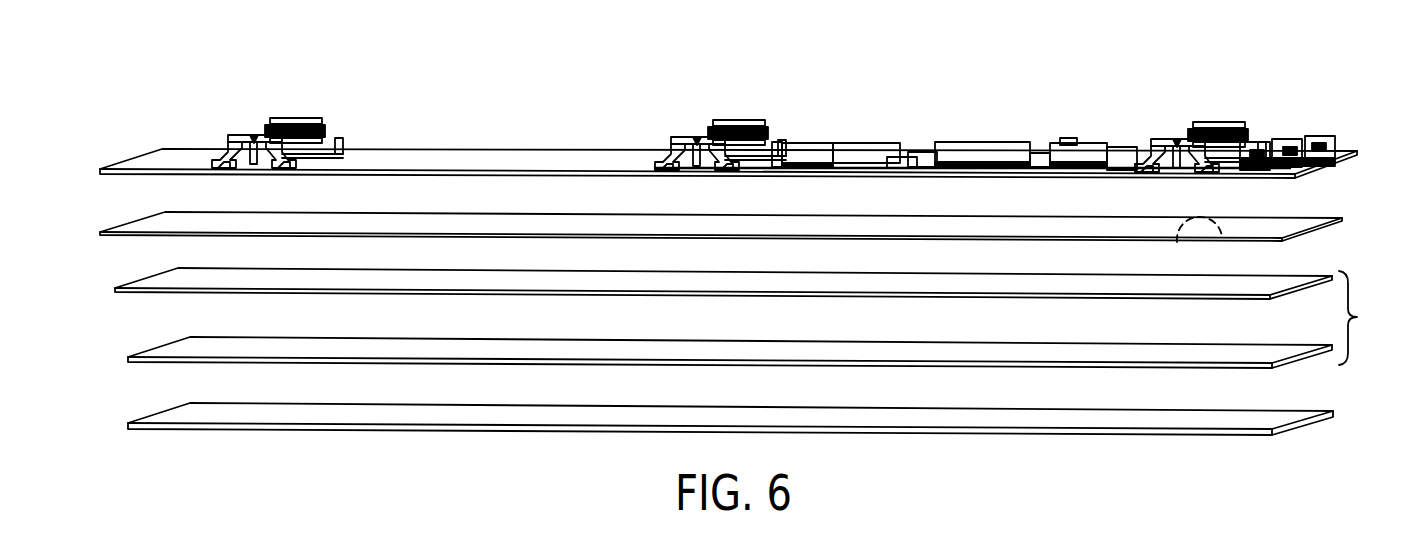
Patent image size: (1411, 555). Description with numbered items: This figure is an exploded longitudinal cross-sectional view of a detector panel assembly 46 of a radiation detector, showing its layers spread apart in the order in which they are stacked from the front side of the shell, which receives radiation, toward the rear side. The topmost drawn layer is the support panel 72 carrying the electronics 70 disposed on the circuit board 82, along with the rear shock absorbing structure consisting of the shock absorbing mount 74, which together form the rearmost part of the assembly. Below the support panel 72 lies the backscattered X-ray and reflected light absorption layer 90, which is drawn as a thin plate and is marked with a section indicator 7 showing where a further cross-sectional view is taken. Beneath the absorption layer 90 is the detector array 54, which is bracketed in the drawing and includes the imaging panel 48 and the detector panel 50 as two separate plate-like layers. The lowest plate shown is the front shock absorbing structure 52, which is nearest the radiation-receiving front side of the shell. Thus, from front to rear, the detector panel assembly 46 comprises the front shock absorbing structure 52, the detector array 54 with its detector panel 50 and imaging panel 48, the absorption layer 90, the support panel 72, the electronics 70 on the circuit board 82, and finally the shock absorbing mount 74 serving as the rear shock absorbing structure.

The detector panel assembly 46 is at (786, 101).
The support panel 72 is at (493, 148).
The shock absorbing mount 74 is at (277, 120).
The electronics 70 is at (1042, 158).
The circuit board 82 is at (1245, 170).
The backscattered X-ray and reflected light absorption layer 90 is at (1002, 238).
The section view indicator 7 is at (1172, 246).
The detector panel 50 is at (1003, 298).
The imaging panel 48 is at (1003, 366).
The front shock absorbing structure 52 is at (1003, 435).
The detector array 54 is at (1365, 318).